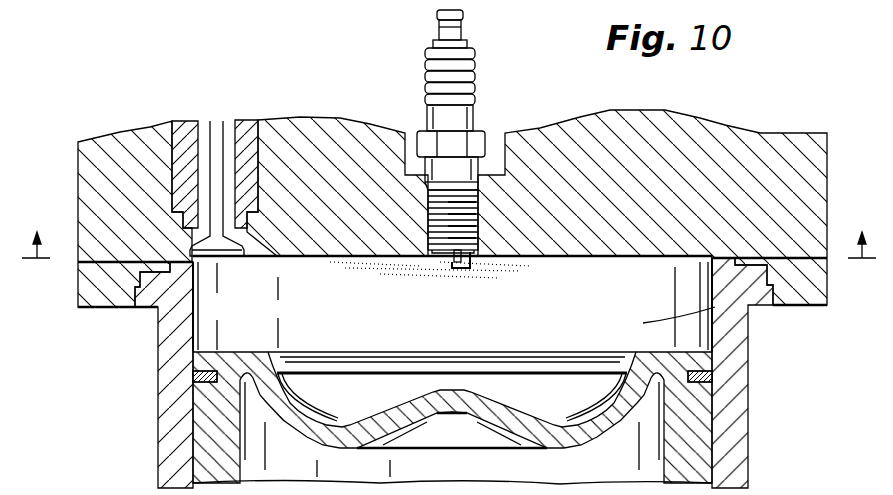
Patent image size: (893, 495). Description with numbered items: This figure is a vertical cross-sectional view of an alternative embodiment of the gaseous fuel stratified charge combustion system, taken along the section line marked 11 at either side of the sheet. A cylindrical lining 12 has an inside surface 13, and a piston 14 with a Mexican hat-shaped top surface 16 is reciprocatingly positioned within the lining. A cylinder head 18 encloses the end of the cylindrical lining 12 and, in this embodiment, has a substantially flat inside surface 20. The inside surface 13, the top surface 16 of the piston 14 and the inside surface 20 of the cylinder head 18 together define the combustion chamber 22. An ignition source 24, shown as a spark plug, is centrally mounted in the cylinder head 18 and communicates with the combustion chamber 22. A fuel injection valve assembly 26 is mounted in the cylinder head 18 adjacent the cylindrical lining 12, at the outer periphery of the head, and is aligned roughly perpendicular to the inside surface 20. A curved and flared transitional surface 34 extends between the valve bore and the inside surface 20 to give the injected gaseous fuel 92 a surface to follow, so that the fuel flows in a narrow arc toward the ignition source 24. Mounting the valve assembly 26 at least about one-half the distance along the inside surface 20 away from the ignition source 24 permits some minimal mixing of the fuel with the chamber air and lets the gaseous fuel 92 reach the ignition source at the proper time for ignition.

The section line 11- 11 is at (449, 260).
The cylindrical lining 12 is at (158, 414).
The inside surface 13 is at (194, 337).
The piston 14 is at (452, 418).
The top surface 16 is at (512, 402).
The cylinder head 18 is at (677, 123).
The inside surface 20 is at (620, 258).
The combustion chamber 22 is at (468, 326).
The ignition source 24 is at (492, 246).
The fuel injection valve assembly 26 is at (260, 152).
The transitional surface 34 is at (266, 258).
The gaseous fuel 92 is at (363, 266).